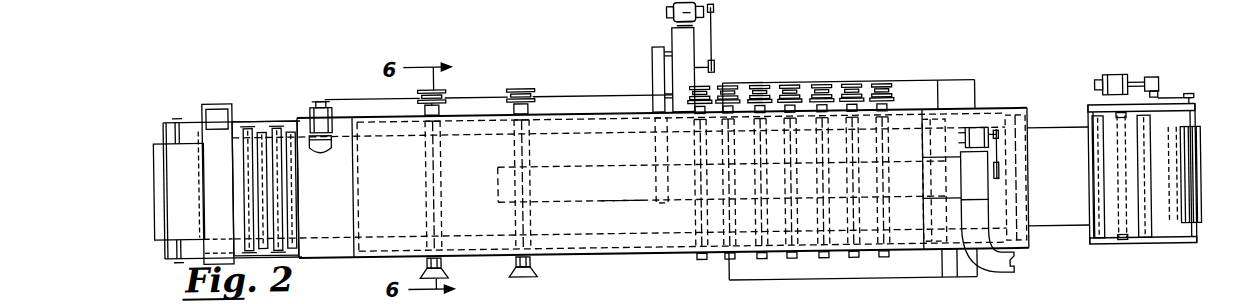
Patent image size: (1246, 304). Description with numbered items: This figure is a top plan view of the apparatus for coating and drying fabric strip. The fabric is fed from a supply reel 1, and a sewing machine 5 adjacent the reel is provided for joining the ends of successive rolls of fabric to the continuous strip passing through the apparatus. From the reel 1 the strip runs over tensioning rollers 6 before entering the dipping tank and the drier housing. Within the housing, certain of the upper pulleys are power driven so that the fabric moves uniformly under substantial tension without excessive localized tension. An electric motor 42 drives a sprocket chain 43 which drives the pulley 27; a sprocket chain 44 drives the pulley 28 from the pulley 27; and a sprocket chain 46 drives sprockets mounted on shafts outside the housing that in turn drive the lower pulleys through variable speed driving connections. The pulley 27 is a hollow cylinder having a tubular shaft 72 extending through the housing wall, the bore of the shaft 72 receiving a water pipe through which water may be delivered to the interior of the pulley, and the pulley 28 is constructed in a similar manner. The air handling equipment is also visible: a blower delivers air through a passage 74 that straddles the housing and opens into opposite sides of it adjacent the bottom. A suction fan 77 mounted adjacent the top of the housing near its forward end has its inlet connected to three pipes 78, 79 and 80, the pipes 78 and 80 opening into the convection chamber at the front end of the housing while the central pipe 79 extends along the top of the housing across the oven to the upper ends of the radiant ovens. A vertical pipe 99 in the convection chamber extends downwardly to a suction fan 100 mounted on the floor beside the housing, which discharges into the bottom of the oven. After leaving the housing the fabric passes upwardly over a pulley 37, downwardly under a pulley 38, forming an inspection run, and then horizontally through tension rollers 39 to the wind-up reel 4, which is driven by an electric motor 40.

The reel 1 is at (152, 179).
The wind-up reel 4 is at (1202, 200).
The sewing machine 5 is at (203, 175).
The tensioning rollers 6 is at (285, 194).
The pulley 27 is at (425, 193).
The pulley 28 is at (500, 170).
The pulley 37 is at (1005, 254).
The pulley 38 is at (1024, 128).
The tension rollers 39 is at (1155, 244).
The electric motor 40 is at (1117, 86).
The electric motor 42 is at (309, 112).
The sprocket chain 43 is at (360, 100).
The sprocket chain 44 is at (488, 100).
The sprocket chain 46 is at (591, 100).
The tubular shaft 72 is at (447, 264).
The passage 74 is at (936, 92).
The suction fan 77 is at (980, 171).
The pipe 78 is at (950, 282).
The pipe 79 is at (584, 204).
The pipe 80 is at (945, 134).
The vertical pipe 99 is at (656, 167).
The suction fan 100 is at (678, 45).